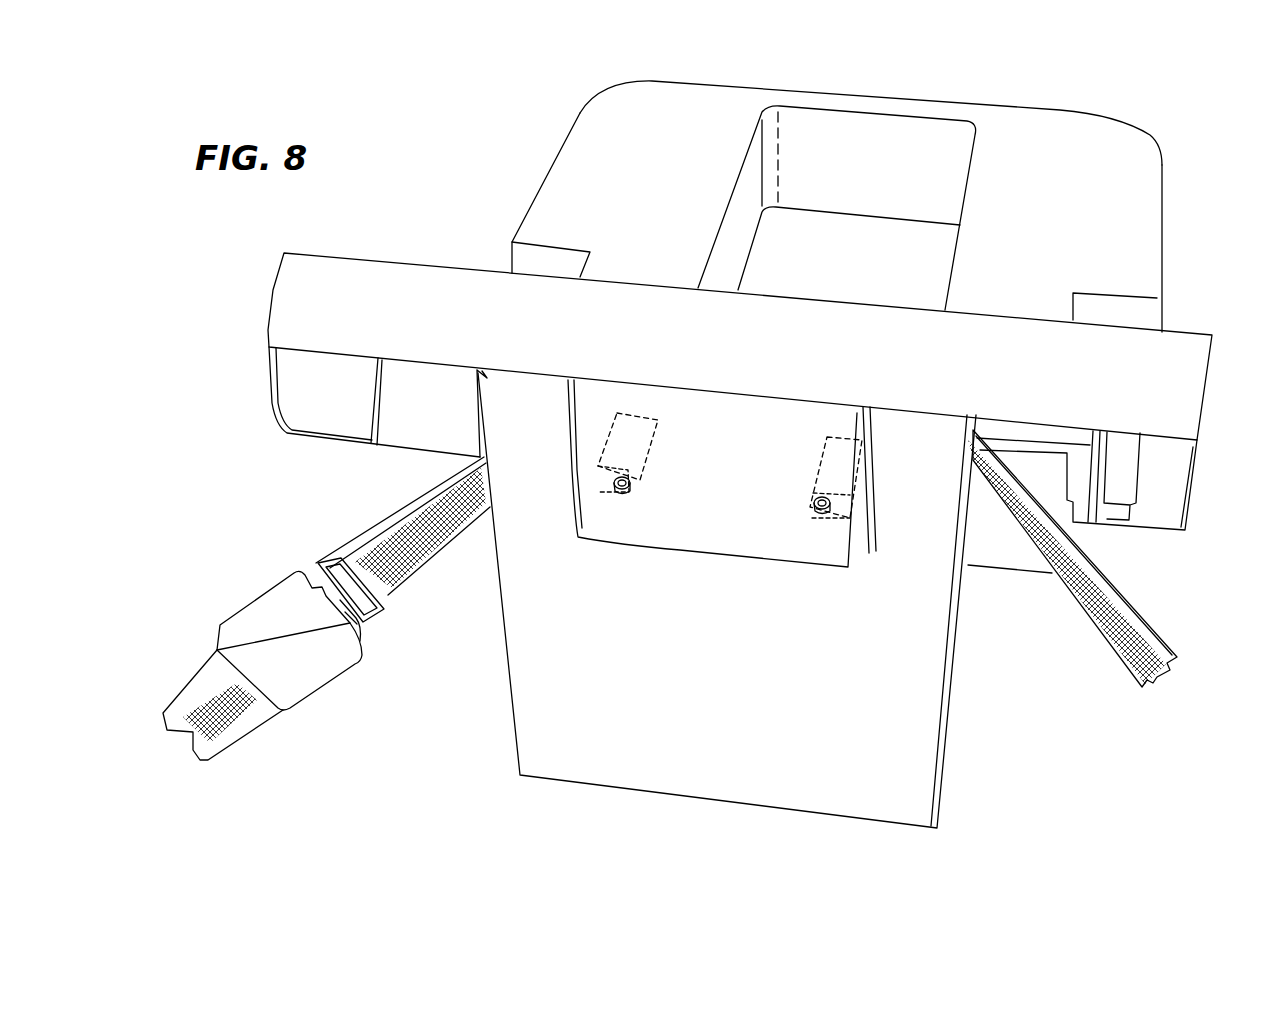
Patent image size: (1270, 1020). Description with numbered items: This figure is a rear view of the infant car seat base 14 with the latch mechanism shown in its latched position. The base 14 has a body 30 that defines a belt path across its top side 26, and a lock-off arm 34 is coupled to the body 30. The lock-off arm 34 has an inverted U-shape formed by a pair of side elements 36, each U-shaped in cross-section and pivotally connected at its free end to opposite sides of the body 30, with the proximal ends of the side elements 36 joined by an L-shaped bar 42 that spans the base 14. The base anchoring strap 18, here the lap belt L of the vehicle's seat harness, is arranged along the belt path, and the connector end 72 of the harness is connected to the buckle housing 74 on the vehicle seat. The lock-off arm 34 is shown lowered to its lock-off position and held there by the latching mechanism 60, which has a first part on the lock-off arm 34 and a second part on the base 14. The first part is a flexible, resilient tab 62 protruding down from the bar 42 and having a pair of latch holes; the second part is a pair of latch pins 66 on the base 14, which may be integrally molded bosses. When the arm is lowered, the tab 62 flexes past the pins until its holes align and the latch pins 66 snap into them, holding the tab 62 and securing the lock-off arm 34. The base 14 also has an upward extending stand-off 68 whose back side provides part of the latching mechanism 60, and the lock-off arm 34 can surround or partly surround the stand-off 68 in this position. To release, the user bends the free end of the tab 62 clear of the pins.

The base 14 is at (486, 162).
The base anchoring strap 18 is at (1062, 597).
The top side 26 is at (1072, 164).
The body 30 is at (1163, 225).
The lock-off arm 34 is at (397, 255).
The side elements 36 is at (271, 388).
The bar 42 is at (977, 338).
The latching mechanism 60 is at (871, 487).
The tab 62 is at (707, 482).
The latch pins 66 is at (603, 473).
The stand-off 68 is at (490, 418).
The connector end 72 is at (368, 628).
The buckle housing 74 is at (288, 635).
The lap belt L is at (417, 542).